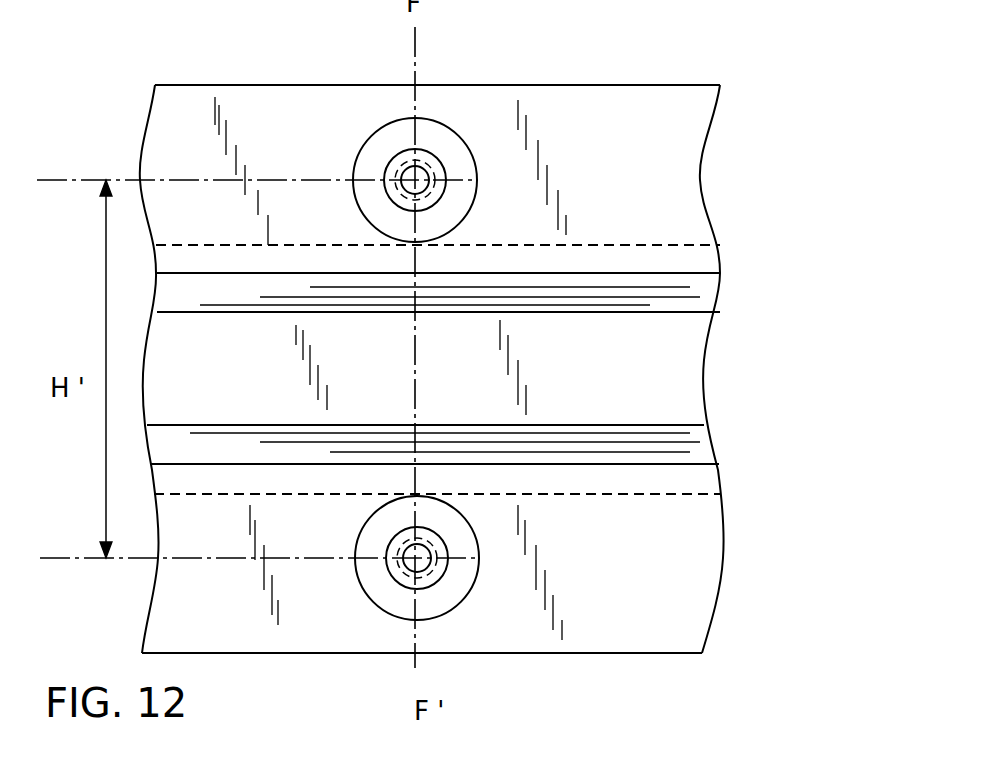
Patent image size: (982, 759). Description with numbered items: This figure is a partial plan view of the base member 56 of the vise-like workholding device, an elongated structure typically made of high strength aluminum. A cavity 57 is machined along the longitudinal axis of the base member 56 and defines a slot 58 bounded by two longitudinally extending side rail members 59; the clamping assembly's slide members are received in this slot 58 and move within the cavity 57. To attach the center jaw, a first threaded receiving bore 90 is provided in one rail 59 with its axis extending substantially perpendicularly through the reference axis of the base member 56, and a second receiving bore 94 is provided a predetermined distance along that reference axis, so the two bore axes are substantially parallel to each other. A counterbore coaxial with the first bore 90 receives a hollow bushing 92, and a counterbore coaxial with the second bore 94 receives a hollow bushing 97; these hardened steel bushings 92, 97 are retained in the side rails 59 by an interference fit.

The base member 56 is at (703, 590).
The cavity 57 is at (655, 245).
The slot 58 is at (433, 369).
The side rail members 59 is at (435, 368).
The first threaded receiving bore 90 is at (417, 580).
The hollow bushing 92 is at (445, 597).
The second receiving bore 94 is at (447, 180).
The hollow bushing 97 is at (383, 139).